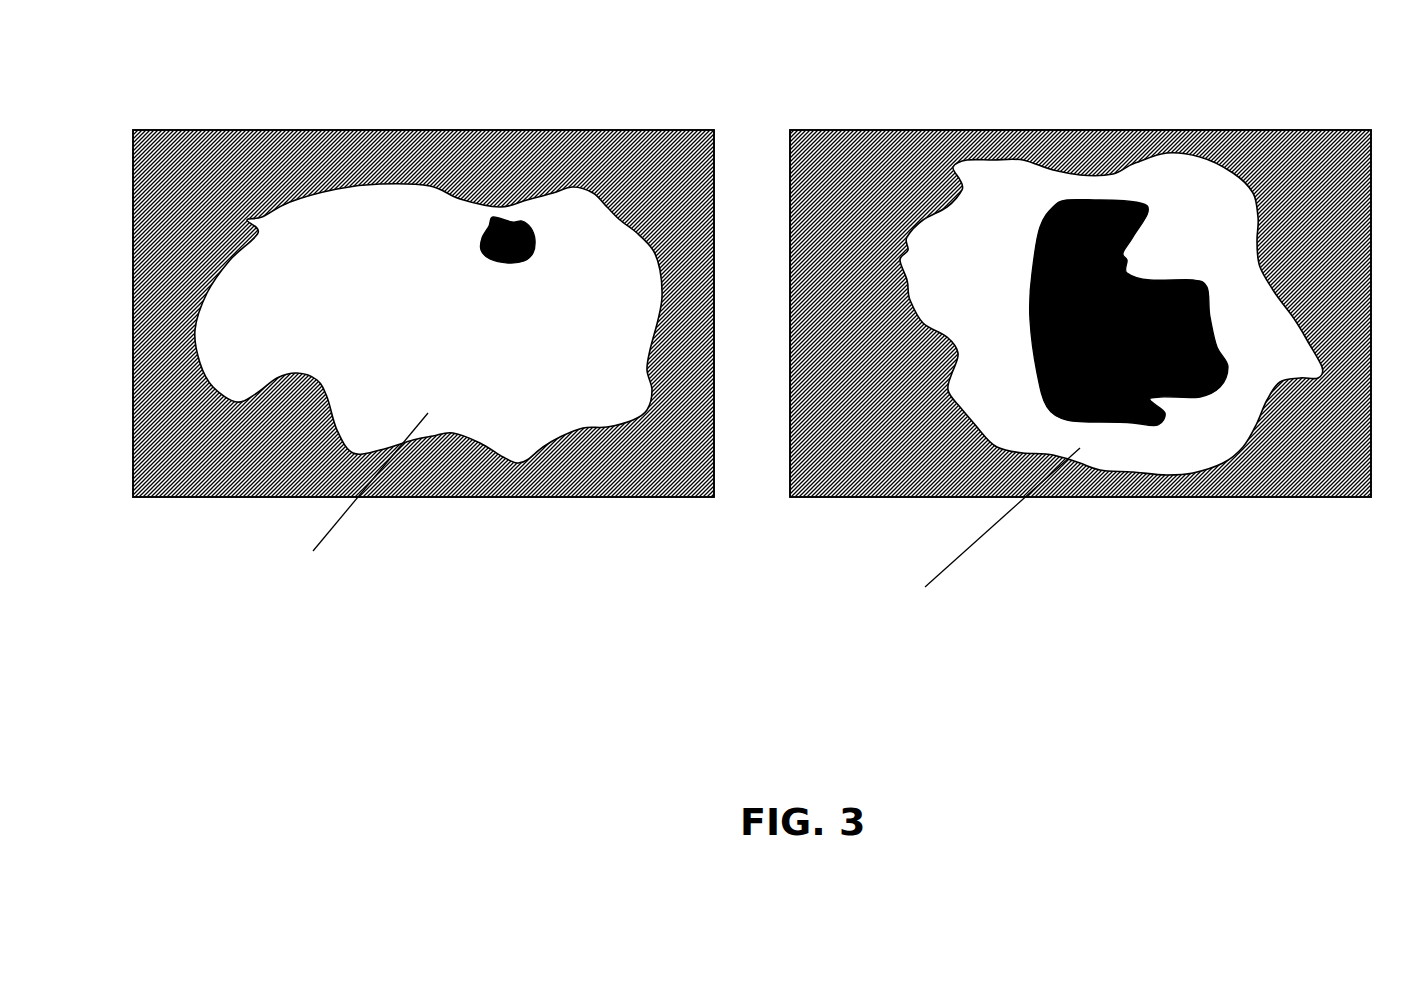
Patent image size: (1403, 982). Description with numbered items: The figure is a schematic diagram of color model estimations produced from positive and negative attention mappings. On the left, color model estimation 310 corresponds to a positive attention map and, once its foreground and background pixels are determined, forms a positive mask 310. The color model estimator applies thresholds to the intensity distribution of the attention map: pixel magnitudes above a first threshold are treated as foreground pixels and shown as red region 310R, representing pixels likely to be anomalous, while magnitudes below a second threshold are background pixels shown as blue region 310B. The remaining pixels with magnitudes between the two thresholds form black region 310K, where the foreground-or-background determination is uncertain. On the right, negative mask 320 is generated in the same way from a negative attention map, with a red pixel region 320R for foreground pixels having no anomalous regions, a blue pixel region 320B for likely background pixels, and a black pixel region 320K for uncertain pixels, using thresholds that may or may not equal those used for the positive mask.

The color model estimation (positive mask) 310 is at (420, 128).
The background pixel region 310B is at (615, 462).
The uncertain pixel region 310K is at (428, 413).
The foreground pixel region 310R is at (512, 219).
The color model estimation (negative mask) 320 is at (1080, 128).
The blue pixel region (blue mask) 320B is at (1310, 478).
The black pixel region (black mask) 320K is at (1080, 448).
The red pixel region (red mask) 320R is at (1067, 201).